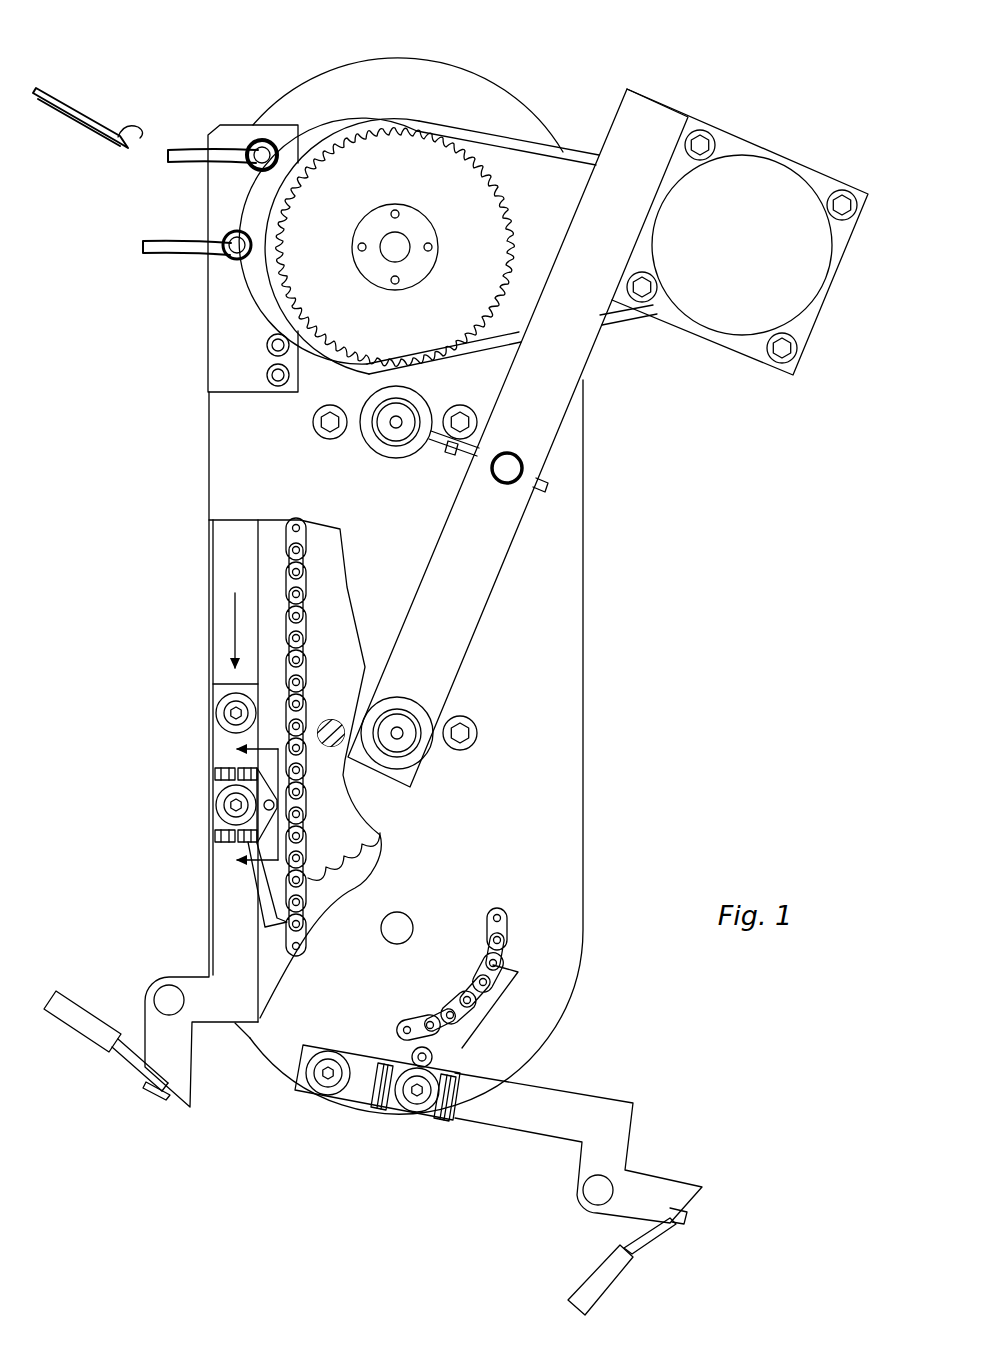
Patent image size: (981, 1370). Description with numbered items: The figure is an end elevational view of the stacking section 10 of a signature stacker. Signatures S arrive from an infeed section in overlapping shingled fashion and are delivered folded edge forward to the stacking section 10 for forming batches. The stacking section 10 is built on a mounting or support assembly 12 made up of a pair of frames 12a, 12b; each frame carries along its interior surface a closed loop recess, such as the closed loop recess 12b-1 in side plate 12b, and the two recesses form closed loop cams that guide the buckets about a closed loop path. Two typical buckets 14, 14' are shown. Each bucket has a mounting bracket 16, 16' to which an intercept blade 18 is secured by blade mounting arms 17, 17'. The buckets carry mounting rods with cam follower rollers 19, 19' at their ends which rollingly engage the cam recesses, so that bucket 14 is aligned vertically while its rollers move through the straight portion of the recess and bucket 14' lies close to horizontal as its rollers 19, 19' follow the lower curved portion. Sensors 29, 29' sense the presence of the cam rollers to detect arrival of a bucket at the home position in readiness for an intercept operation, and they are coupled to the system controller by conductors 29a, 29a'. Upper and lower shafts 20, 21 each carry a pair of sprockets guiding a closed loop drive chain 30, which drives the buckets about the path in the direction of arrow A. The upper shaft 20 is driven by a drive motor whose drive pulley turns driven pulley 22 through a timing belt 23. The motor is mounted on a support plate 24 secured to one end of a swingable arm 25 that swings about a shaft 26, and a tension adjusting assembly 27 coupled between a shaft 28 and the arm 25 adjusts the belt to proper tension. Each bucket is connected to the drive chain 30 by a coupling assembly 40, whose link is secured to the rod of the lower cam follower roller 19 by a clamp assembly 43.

The stacking section 10 is at (788, 76).
The mounting or support assembly 12 is at (585, 623).
The frame 12a is at (292, 478).
The frame 12b is at (354, 654).
The closed loop recess 12b-1 is at (237, 1027).
The bucket 14 is at (176, 749).
The bucket 14' is at (578, 1148).
The mounting bracket 16 is at (164, 976).
The mounting bracket 16' is at (627, 1131).
The blade mounting arm 17 is at (127, 1093).
The blade mounting arm 17' is at (627, 1261).
The intercept blade 18 is at (77, 1002).
The cam follower roller 19 is at (203, 755).
The cam follower roller 19' is at (377, 1120).
The upper shaft 20 is at (393, 250).
The lower shaft 21 is at (408, 916).
The driven pulley 22 is at (512, 225).
The timing belt 23 is at (578, 160).
The support plate 24 is at (822, 180).
The swingable arm 25 is at (460, 632).
The shaft 26 is at (405, 745).
The tension adjusting assembly 27 is at (446, 466).
The shaft 28 is at (385, 432).
The sensor 29 is at (232, 272).
The sensor 29' is at (242, 173).
The conductor 29a is at (174, 262).
The conductor 29a' is at (192, 171).
The drive chain 30 is at (300, 542).
The coupling assembly 40 is at (252, 888).
The clamp assembly 43 is at (215, 773).
The arrow A is at (228, 608).
The signatures S is at (93, 118).